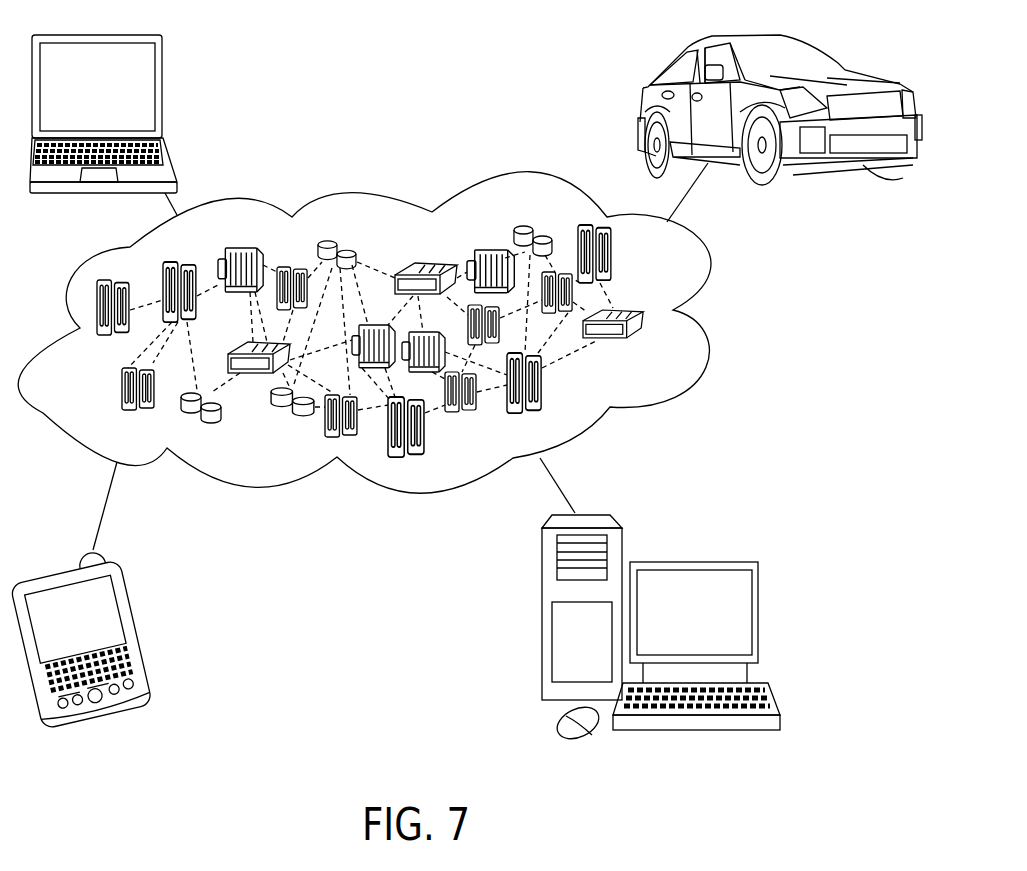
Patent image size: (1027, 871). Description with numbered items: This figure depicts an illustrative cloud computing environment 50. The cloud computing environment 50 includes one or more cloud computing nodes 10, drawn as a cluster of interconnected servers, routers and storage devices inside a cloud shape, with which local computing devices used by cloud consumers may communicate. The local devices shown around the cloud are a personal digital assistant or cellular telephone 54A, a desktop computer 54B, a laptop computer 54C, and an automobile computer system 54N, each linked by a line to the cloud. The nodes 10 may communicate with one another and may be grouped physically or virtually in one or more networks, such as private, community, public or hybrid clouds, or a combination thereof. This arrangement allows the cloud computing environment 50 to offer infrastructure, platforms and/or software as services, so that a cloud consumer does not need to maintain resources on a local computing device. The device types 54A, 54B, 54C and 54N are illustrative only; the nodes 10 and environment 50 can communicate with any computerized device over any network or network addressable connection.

The cloud computing node 10 is at (670, 366).
The cloud computing environment 50 is at (712, 260).
The personal digital assistant or cellular telephone 54A is at (132, 612).
The desktop computer 54B is at (760, 610).
The laptop computer 54C is at (163, 92).
The automobile computer system 54N is at (833, 55).